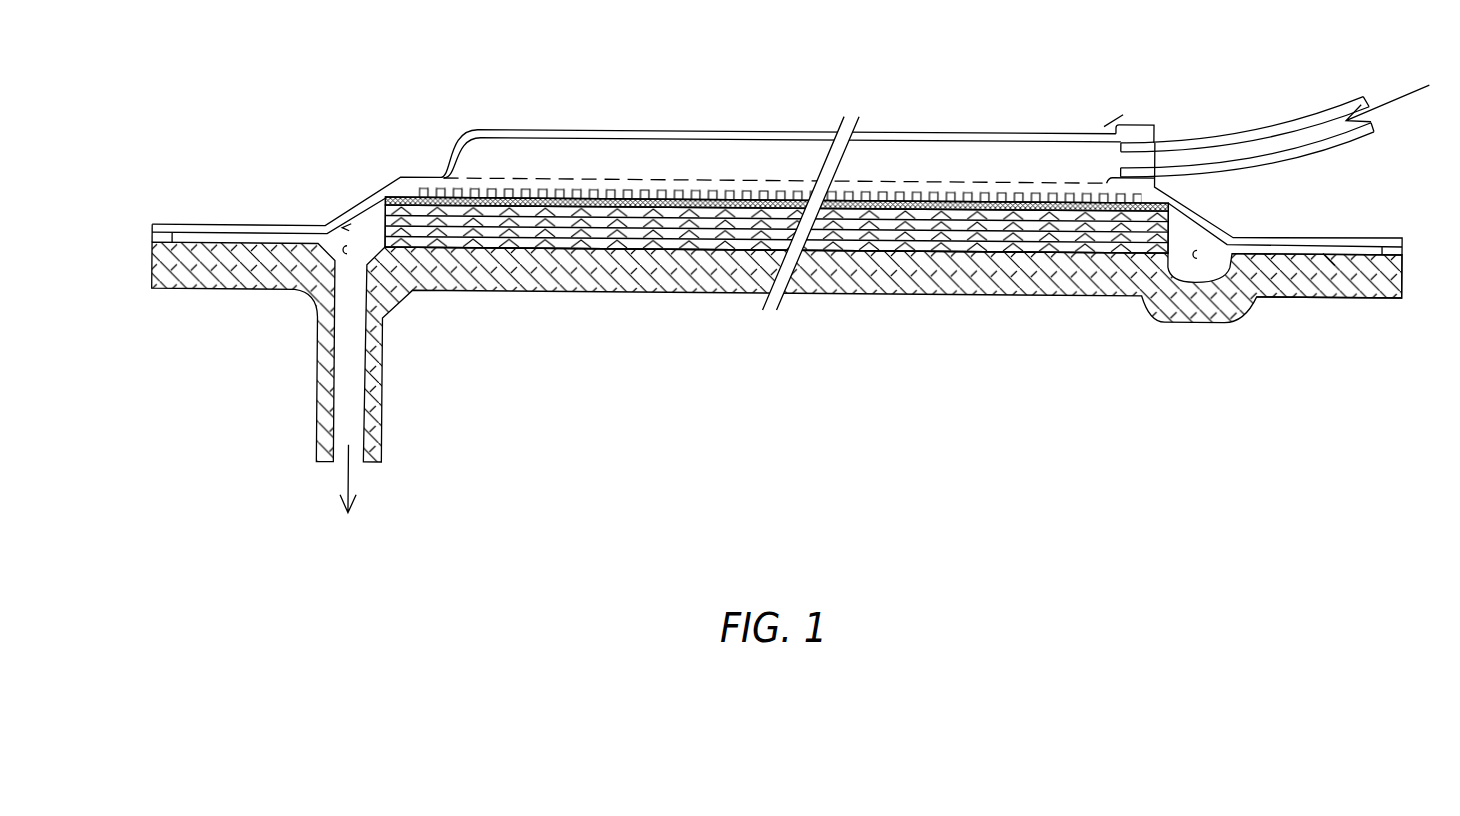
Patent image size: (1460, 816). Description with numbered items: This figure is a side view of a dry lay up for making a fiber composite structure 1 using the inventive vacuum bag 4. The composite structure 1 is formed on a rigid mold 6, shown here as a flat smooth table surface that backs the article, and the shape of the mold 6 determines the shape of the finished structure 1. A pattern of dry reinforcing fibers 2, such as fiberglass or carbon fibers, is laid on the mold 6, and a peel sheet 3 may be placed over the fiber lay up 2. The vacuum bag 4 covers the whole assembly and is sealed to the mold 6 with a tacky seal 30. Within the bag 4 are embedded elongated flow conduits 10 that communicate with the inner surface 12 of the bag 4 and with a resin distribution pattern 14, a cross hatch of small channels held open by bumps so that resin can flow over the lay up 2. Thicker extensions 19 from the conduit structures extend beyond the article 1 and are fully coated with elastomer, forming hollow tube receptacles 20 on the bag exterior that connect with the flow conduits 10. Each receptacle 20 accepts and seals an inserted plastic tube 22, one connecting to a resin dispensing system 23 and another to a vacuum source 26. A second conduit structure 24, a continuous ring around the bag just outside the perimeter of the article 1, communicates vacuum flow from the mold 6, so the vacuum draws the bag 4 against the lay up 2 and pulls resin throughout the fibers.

The fiber composite structure 1 is at (382, 213).
The pattern of dry reinforcing fibers 2 is at (628, 262).
The peel sheet 3 is at (987, 184).
The vacuum bag 4 is at (235, 223).
The rigid mold 6 is at (202, 286).
The elongated flow conduits 10 is at (735, 174).
The inner surface 12 is at (1390, 309).
The resin distribution pattern 14 is at (545, 188).
The thicker extensions 19 is at (1110, 112).
The tube receptacles 20 is at (1147, 124).
The plastic tube 22 is at (1283, 118).
The resin dispensing system 23 is at (1387, 91).
The second conduit structure 24 is at (780, 260).
The vacuum source 26 is at (353, 477).
The tacky seal 30 is at (153, 235).